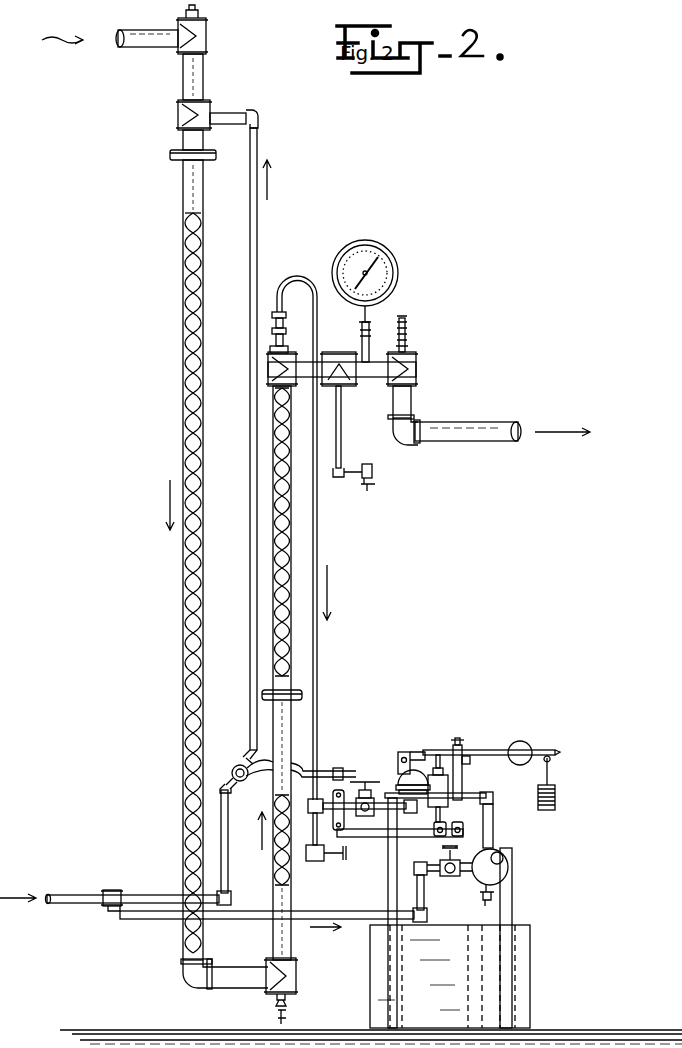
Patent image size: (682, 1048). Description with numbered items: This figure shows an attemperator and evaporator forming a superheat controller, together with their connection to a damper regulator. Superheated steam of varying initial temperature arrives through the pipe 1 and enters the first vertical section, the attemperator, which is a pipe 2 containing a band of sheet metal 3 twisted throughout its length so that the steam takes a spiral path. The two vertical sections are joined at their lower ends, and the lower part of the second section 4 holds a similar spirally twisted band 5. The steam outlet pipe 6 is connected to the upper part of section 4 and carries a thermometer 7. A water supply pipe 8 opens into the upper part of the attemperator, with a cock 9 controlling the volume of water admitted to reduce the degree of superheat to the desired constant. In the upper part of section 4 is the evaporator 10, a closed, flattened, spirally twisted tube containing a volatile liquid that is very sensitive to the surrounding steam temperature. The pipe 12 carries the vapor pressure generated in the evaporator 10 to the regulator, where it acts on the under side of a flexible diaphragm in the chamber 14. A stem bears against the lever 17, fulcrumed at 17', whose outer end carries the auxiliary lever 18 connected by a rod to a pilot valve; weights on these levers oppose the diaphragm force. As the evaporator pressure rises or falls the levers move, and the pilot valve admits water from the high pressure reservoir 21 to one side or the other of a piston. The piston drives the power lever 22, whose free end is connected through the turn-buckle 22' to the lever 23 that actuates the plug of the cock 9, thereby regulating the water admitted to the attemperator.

The pipe 1 is at (162, 46).
The pipe 2 is at (183, 252).
The band of sheet metal 3 is at (183, 365).
The second section 4 is at (292, 906).
The spirally twisted band 5 is at (271, 805).
The steam outlet pipe 6 is at (506, 441).
The thermometer 7 is at (405, 333).
The water supply pipe 8 is at (254, 276).
The cock 9 is at (236, 766).
The evaporator 10 is at (293, 554).
The pipe 12 is at (300, 281).
The chamber 14 is at (374, 790).
The lever 17 is at (422, 781).
The fulcrum 17' is at (391, 744).
The auxiliary lever 18 is at (471, 751).
The high pressure reservoir 21 is at (506, 868).
The power lever 22 is at (400, 843).
The turn-buckle 22' is at (357, 811).
The lever 23 is at (317, 772).